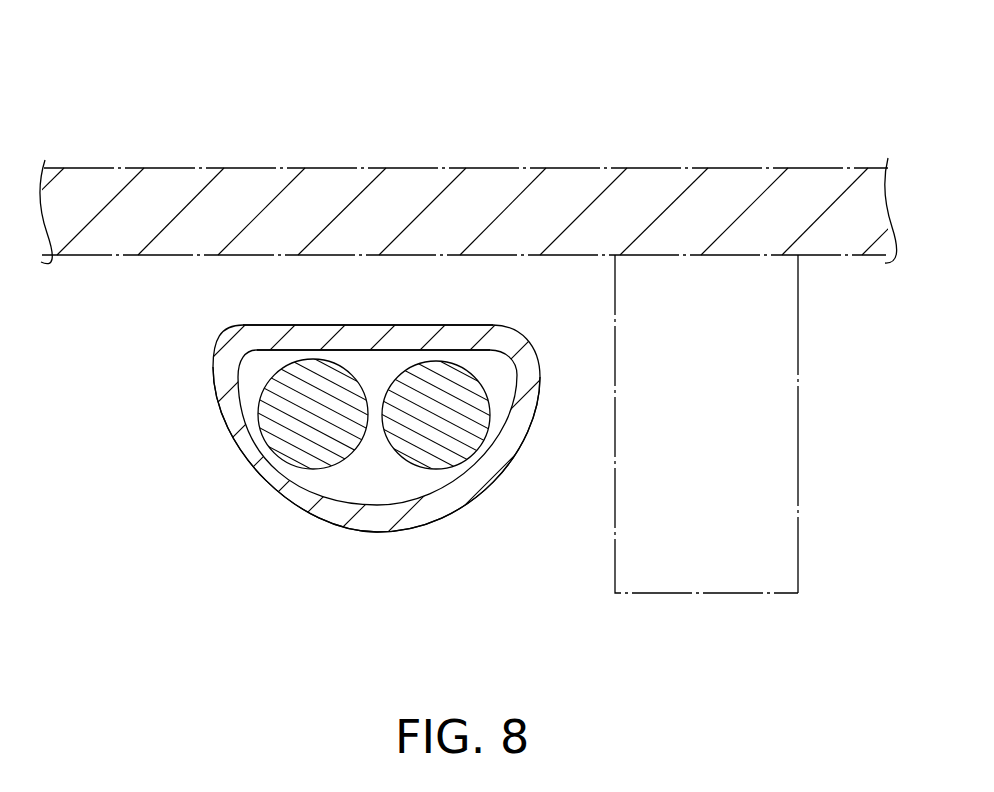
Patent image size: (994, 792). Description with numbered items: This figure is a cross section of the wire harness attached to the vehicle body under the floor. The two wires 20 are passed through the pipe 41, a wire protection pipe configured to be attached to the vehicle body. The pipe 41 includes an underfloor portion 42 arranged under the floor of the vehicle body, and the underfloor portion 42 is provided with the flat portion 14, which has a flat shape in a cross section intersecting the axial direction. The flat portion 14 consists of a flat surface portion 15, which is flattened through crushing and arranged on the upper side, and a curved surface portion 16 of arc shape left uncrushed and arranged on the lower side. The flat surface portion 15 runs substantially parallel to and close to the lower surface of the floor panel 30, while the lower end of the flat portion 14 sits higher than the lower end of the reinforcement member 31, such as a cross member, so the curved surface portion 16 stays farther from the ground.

The flat portion 14 is at (245, 465).
The flat surface portion 15 is at (425, 330).
The curved surface portion 16 is at (418, 512).
The wires 20 is at (420, 393).
The floor panel 30 is at (558, 184).
The reinforcement member 31 is at (773, 395).
The pipe 41 is at (225, 393).
The underfloor portion 42 is at (232, 418).